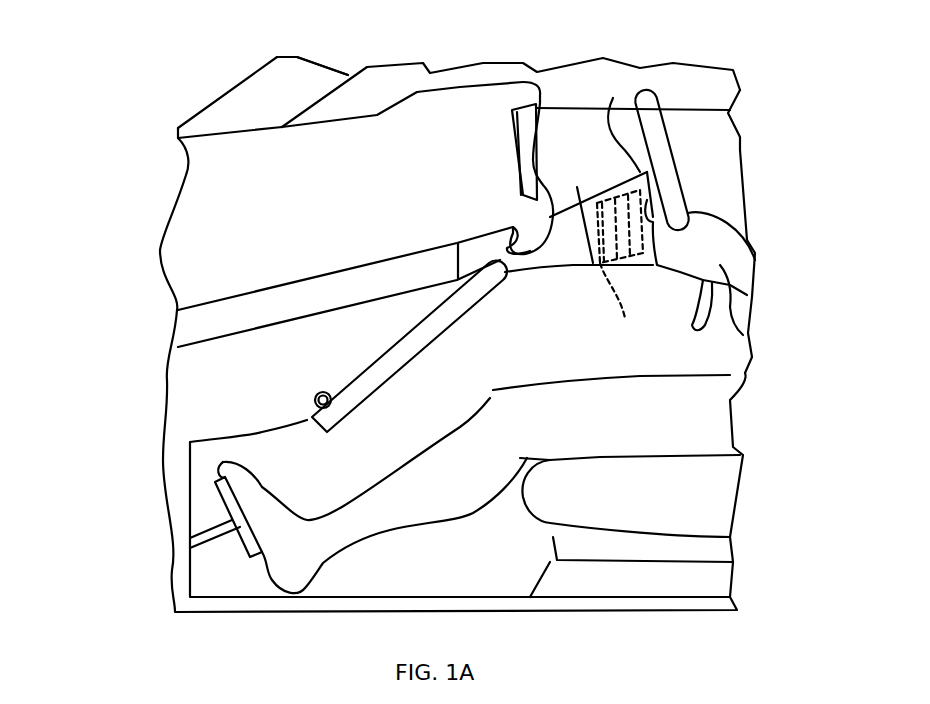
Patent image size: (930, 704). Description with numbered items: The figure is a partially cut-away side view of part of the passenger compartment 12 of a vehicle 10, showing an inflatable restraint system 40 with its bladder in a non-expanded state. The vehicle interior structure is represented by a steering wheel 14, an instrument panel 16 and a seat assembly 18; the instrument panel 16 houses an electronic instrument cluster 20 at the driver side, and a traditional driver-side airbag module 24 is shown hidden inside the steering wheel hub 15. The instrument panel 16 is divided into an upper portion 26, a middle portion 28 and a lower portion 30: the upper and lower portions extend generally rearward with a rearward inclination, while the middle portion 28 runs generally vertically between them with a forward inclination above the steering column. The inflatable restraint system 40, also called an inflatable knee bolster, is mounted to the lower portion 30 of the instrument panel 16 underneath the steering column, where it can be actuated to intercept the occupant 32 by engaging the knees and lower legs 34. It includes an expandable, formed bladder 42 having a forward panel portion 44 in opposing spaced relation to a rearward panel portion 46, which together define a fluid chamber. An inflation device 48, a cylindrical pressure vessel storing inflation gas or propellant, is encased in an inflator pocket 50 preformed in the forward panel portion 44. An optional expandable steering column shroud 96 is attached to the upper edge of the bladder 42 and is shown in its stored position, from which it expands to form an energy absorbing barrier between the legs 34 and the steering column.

The vehicle 10 is at (108, 197).
The passenger compartment 12 is at (727, 88).
The steering wheel 14 is at (642, 100).
The steering wheel hub 15 is at (622, 122).
The instrument panel 16 is at (523, 88).
The seat assembly 18 is at (553, 517).
The electronic instrument cluster 20 is at (540, 158).
The airbag module 24 is at (620, 270).
The upper portion of the instrument panel 26 is at (381, 93).
The middle portion of the instrument panel 28 is at (580, 190).
The lower portion of the instrument panel 30 is at (485, 386).
The occupant 32 is at (690, 390).
The legs 34 is at (417, 497).
The inflatable restraint system 40 is at (423, 353).
The bladder 42 is at (408, 389).
The forward panel portion 44 is at (350, 385).
The rearward panel portion 46 is at (363, 397).
The inflation device 48 is at (313, 403).
The inflator pocket 50 is at (307, 412).
The steering column shroud 96 is at (445, 290).